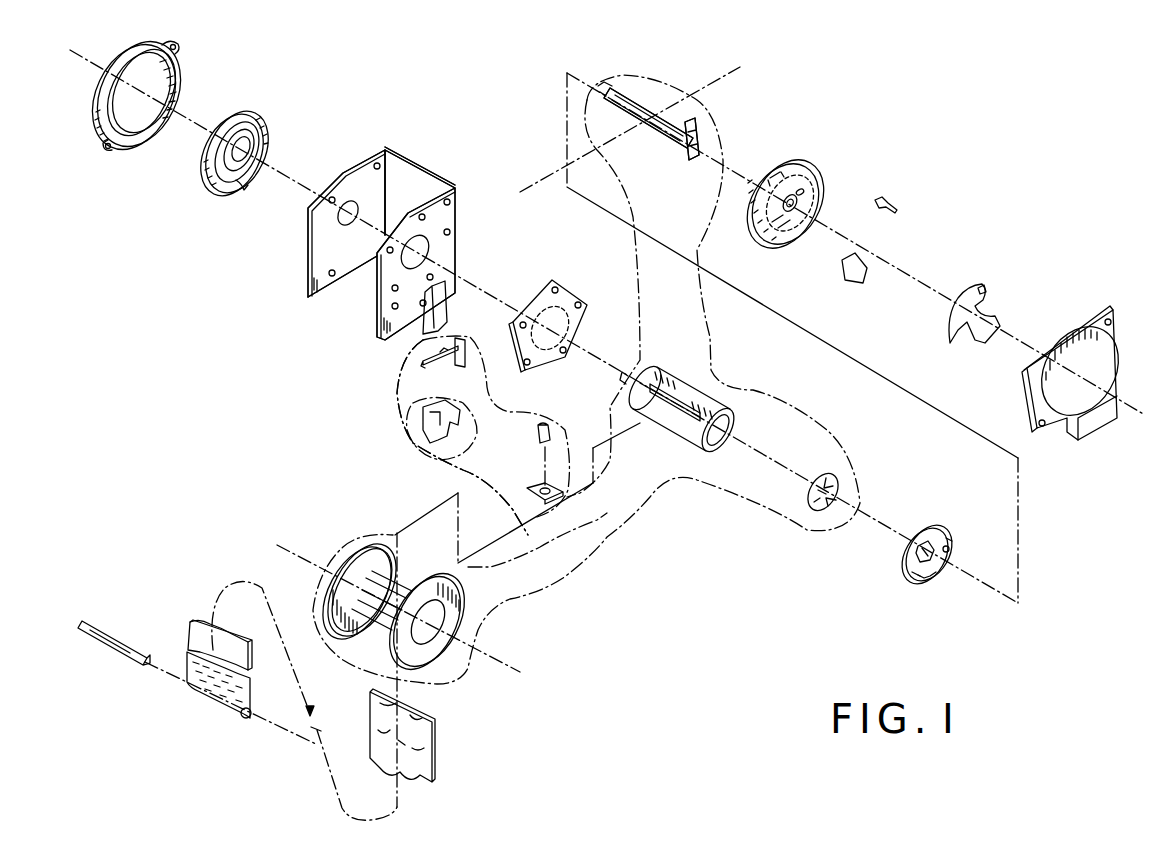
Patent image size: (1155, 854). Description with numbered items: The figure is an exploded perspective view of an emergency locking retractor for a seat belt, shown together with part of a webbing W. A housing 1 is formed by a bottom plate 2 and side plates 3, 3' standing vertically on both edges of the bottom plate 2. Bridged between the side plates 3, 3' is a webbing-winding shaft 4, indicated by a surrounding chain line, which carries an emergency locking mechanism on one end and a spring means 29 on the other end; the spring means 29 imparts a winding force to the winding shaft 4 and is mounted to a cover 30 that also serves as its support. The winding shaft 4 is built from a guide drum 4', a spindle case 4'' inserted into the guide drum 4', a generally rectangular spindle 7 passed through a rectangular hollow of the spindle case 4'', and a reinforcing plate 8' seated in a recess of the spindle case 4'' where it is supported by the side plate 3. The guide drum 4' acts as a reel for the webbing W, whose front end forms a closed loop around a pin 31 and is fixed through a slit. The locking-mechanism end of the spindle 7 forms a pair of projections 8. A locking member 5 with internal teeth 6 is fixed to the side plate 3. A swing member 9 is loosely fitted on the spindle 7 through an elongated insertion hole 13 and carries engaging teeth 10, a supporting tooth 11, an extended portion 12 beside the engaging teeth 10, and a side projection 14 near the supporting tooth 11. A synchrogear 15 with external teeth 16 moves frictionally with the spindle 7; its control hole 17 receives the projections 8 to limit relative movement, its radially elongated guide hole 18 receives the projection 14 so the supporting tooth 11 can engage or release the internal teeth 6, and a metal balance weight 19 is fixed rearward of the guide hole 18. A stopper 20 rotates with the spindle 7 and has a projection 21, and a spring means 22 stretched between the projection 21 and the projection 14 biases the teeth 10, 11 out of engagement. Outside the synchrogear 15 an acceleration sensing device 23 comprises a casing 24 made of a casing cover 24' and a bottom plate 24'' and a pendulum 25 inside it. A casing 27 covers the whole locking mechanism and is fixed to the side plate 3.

The housing 1 is at (400, 150).
The bottom plate 2 is at (420, 183).
The side plate 3 is at (393, 264).
The side plate 3' is at (323, 223).
The webbing-winding shaft 4 is at (651, 104).
The guide drum 4' is at (367, 595).
The spindle case 4'' is at (680, 409).
The locking member 5 is at (556, 289).
The internal teeth 6 is at (575, 317).
The spindle 7 is at (647, 130).
The projections 8 is at (715, 133).
The reinforcing plate 8' is at (792, 489).
The swing member 9 is at (925, 530).
The engaging teeth 10 is at (930, 578).
The supporting tooth 11 is at (950, 540).
The extended portion 12 is at (917, 577).
The insertion hole 13 is at (910, 552).
The projection 14 is at (950, 547).
The synchrogear 15 is at (812, 172).
The external teeth 16 is at (770, 178).
The control hole 17 is at (797, 213).
The guide hole 18 is at (818, 192).
The balance weight 19 is at (845, 275).
The stopper 20 is at (953, 330).
The projection 21 is at (988, 285).
The spring means 22 is at (883, 213).
The acceleration sensing device 23 is at (390, 400).
The casing 24 is at (479, 385).
The casing cover 24' is at (415, 444).
The bottom plate 24'' is at (515, 508).
The pendulum 25 is at (537, 433).
The casing 27 is at (1102, 412).
The spring means 29 is at (223, 180).
The cover 30 is at (140, 143).
The pin 31 is at (83, 640).
The webbing W is at (208, 697).